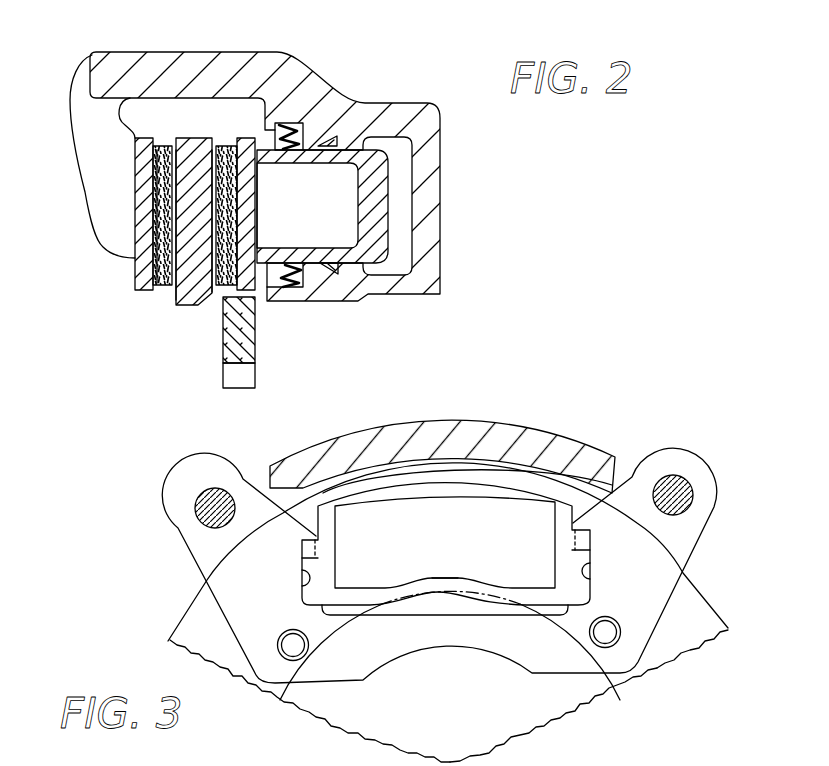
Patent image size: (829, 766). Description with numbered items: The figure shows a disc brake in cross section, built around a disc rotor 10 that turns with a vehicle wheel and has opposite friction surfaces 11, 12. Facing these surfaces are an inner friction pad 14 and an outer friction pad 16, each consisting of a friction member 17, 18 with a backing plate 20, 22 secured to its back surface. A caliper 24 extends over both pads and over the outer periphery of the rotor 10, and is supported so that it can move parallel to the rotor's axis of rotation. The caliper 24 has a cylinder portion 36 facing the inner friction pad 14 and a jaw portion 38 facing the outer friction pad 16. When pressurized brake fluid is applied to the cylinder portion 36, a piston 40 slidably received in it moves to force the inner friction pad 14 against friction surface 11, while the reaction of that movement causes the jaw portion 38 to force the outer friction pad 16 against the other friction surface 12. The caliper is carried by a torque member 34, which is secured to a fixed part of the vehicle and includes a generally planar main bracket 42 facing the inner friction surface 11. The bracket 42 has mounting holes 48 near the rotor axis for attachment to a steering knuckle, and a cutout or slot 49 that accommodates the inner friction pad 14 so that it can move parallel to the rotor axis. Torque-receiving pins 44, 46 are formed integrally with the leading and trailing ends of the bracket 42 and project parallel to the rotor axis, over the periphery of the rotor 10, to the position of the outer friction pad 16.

In FIG. 2, the disc rotor 10 is at (192, 296).
In FIG. 3, the disc rotor 10 is at (548, 712).
In FIG. 2, the friction surface 11 is at (217, 292).
In FIG. 3, the friction surface 11 is at (672, 655).
In FIG. 2, the friction surface 12 is at (175, 290).
In FIG. 2, the inner friction pad 14 is at (248, 120).
In FIG. 3, the inner friction pad 14 is at (474, 614).
In FIG. 2, the outer friction pad 16 is at (155, 118).
In FIG. 2, the friction member 17 is at (223, 148).
In FIG. 3, the friction member 17 is at (424, 572).
In FIG. 2, the friction member 18 is at (162, 148).
In FIG. 2, the backing plate 20 is at (257, 204).
In FIG. 3, the backing plate 20 is at (370, 598).
In FIG. 2, the backing plate 22 is at (138, 163).
In FIG. 2, the caliper 24 is at (265, 153).
In FIG. 3, the caliper 24 is at (480, 400).
In FIG. 3, the torque member 34 is at (456, 517).
In FIG. 2, the cylinder portion 36 is at (437, 157).
In FIG. 2, the jaw portion 38 is at (93, 192).
In FIG. 2, the piston 40 is at (375, 209).
In FIG. 2, the main bracket 42 is at (252, 335).
In FIG. 3, the main bracket 42 is at (687, 573).
In FIG. 3, the torque-receiving pin 44 is at (192, 492).
In FIG. 3, the torque-receiving pin 46 is at (683, 488).
In FIG. 3, the mounting holes 48 is at (309, 652).
In FIG. 3, the slot 49 is at (303, 583).